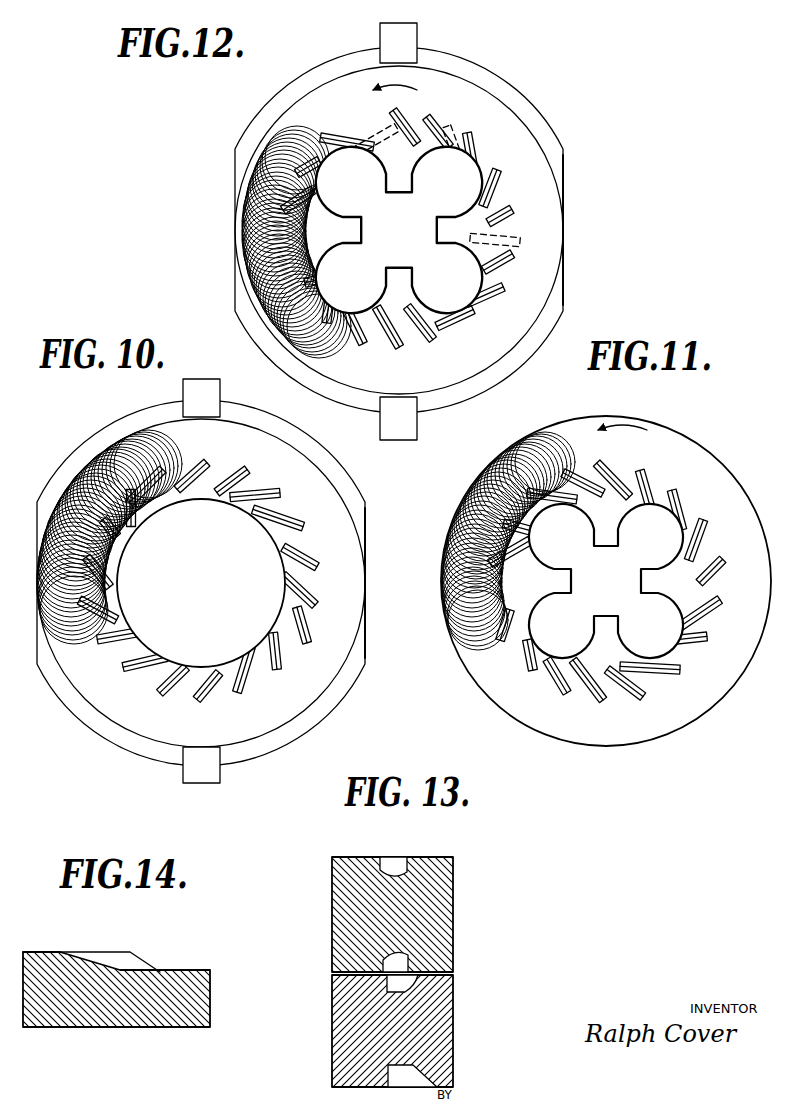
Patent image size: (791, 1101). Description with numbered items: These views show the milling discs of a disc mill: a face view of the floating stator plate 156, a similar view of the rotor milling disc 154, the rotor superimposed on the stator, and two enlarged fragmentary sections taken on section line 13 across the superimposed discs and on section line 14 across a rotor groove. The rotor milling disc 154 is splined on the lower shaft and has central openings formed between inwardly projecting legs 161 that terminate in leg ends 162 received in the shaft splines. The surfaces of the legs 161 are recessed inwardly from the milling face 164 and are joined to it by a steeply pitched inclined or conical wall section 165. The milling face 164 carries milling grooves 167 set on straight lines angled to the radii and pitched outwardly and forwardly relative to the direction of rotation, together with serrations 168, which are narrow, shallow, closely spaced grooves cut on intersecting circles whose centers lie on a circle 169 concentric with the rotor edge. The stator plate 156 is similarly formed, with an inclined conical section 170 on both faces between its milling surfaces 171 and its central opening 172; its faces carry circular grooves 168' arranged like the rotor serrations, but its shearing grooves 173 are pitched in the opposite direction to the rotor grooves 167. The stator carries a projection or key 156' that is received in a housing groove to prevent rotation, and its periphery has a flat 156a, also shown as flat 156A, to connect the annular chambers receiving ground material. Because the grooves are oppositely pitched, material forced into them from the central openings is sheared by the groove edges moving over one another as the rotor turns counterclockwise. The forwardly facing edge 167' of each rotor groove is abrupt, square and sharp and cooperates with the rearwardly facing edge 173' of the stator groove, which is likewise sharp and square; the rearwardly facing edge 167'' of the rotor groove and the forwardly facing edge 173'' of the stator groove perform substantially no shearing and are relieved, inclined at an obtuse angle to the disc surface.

In FIG. 12, the section line 13— 13 is at (345, 117).
In FIG. 11, the section line 14— 14 is at (593, 450).
In FIG. 12, the rotor milling disc 154 is at (523, 140).
In FIG. 11, the rotor milling disc 154 is at (666, 441).
In FIG. 13, the rotor milling disc 154 is at (453, 891).
In FIG. 12, the floating stator plate 156 is at (399, 230).
In FIG. 10, the floating stator plate 156 is at (201, 583).
In FIG. 13, the floating stator plate 156 is at (398, 1030).
In FIG. 12, the projection or key 156' is at (426, 227).
In FIG. 10, the projection or key 156' is at (195, 561).
In FIG. 12, the flat 156a is at (564, 170).
In FIG. 10, the flat 156A is at (364, 667).
In FIG. 12, the inwardly projecting leg 161 is at (387, 170).
In FIG. 11, the inwardly projecting leg 161 is at (548, 602).
In FIG. 12, the leg end 162 is at (363, 230).
In FIG. 11, the leg end 162 is at (575, 570).
In FIG. 14, the leg end 162 is at (180, 976).
In FIG. 11, the milling face 164 is at (517, 647).
In FIG. 14, the milling face 164 is at (47, 950).
In FIG. 11, the inclined or conical wall section 165 is at (701, 595).
In FIG. 14, the inclined or conical wall section 165 is at (150, 970).
In FIG. 11, the milling groove 167 is at (631, 578).
In FIG. 13, the milling groove 167 is at (439, 902).
In FIG. 14, the milling groove 167 is at (140, 945).
In FIG. 11, the forwardly facing edge 167' is at (705, 508).
In FIG. 13, the forwardly facing edge 167' is at (456, 892).
In FIG. 14, the forwardly facing edge 167' is at (91, 951).
In FIG. 11, the rearwardly facing edge 167'' is at (661, 461).
In FIG. 13, the rearwardly facing edge 167'' is at (348, 894).
In FIG. 12, the serrations 168 is at (269, 242).
In FIG. 11, the serrations 168 is at (508, 541).
In FIG. 10, the circular grooves 168' is at (109, 531).
In FIG. 11, the circle 169 is at (485, 646).
In FIG. 10, the inclined beveled or conical section 170 is at (218, 498).
In FIG. 10, the milling surface 171 is at (225, 428).
In FIG. 10, the central opening 172 is at (186, 630).
In FIG. 10, the shearing or milling groove 173 is at (198, 580).
In FIG. 13, the shearing or milling groove 173 is at (363, 1031).
In FIG. 10, the rearwardly facing edge 173' is at (235, 466).
In FIG. 13, the rearwardly facing edge 173' is at (334, 985).
In FIG. 10, the forwardly facing edge 173'' is at (294, 506).
In FIG. 13, the forwardly facing edge 173'' is at (477, 985).